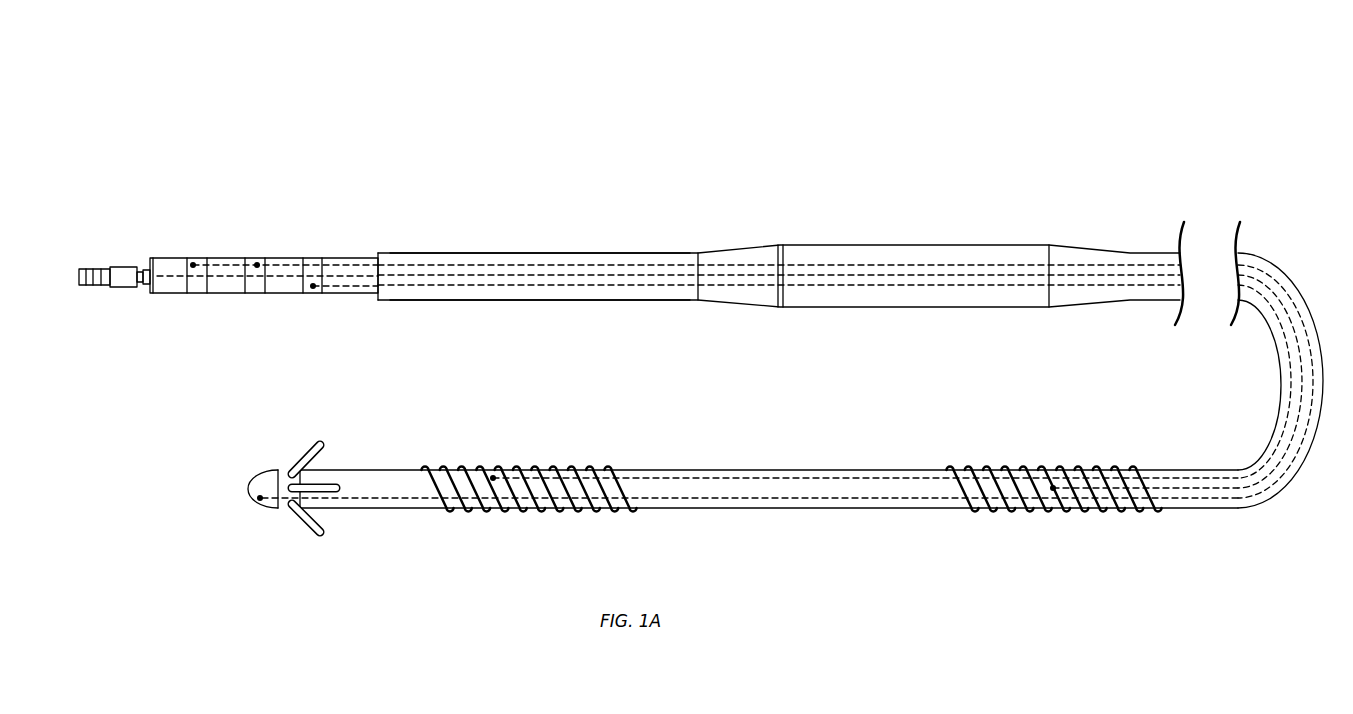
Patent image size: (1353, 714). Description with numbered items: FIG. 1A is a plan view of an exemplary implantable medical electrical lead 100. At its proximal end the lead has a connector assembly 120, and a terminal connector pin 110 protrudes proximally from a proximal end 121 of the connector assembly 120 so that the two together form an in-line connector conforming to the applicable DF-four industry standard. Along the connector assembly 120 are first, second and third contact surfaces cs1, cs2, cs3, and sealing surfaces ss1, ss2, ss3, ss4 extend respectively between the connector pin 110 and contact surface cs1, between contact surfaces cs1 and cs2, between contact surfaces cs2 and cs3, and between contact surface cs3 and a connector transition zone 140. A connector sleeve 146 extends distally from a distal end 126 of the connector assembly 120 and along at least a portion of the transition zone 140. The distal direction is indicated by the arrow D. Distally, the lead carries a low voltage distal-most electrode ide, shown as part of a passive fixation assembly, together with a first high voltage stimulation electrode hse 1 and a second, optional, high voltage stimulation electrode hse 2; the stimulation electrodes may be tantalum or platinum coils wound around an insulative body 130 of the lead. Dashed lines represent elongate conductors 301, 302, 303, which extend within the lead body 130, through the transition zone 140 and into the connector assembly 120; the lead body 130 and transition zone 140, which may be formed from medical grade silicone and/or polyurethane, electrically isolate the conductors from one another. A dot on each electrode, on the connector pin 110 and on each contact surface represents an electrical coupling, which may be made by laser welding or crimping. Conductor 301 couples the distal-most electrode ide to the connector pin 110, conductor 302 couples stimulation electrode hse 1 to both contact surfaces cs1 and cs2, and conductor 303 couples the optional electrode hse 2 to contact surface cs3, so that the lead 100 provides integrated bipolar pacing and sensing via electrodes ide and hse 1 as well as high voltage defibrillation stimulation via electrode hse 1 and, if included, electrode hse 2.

The implantable medical electrical lead 100 is at (445, 108).
The terminal connector pin 110 is at (98, 295).
The connector assembly 120 is at (153, 210).
The proximal end 121 is at (142, 247).
The distal end 126 is at (417, 298).
The insulative body 130 is at (1283, 435).
The connector transition zone 140 is at (1180, 210).
The connector sleeve 146 is at (445, 262).
The elongate conductor 301 is at (545, 275).
The elongate conductor 302 is at (593, 265).
The elongate conductor 303 is at (500, 285).
The sealing surface ss1 is at (172, 293).
The sealing surface ss2 is at (232, 293).
The sealing surface ss3 is at (290, 293).
The sealing surface ss4 is at (358, 293).
The first contact surface cs1 is at (197, 293).
The second contact surface cs2 is at (255, 293).
The third contact surface cs3 is at (303, 293).
The distal direction D is at (280, 250).
The first high voltage stimulation electrode hse 1 is at (438, 520).
The second high voltage stimulation electrode hse 2 is at (945, 460).
The low voltage distal-most electrode ide is at (250, 488).